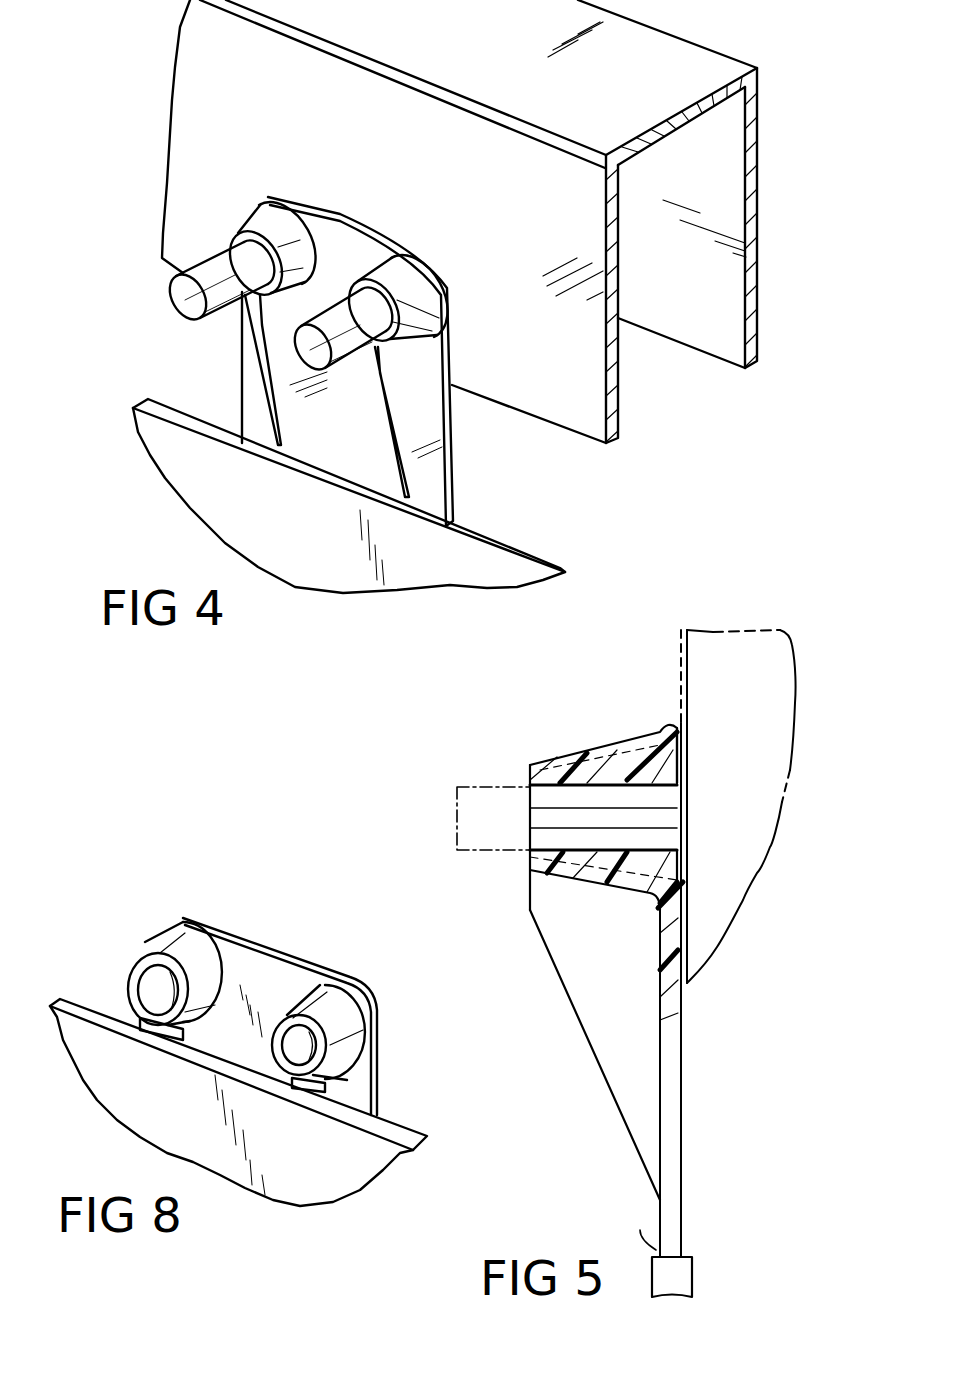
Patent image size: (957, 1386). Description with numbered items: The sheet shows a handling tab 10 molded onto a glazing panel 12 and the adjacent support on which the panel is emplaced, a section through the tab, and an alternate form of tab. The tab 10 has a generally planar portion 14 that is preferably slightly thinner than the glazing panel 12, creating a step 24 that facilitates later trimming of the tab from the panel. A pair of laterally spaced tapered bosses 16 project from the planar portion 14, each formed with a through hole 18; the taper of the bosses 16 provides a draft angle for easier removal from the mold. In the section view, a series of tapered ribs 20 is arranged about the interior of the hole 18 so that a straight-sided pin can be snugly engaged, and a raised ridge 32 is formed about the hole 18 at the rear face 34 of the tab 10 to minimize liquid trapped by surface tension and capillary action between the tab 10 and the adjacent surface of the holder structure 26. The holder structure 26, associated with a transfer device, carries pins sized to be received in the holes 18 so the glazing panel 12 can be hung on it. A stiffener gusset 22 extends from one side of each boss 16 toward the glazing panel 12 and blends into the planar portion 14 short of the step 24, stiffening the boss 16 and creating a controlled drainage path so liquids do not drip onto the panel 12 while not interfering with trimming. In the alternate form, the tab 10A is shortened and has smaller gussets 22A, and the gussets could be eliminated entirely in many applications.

In FIG. 4, the handling tab 10 is at (348, 330).
In FIG. 5, the handling tab 10 is at (520, 952).
In FIG. 8, the handling tab (alternate form) 10A is at (271, 984).
In FIG. 4, the glazing panel 12 is at (494, 567).
In FIG. 5, the glazing panel 12 is at (652, 1268).
In FIG. 8, the glazing panel 12 is at (96, 1086).
In FIG. 4, the planar portion 14 is at (334, 238).
In FIG. 5, the planar portion 14 is at (660, 998).
In FIG. 4, the tapered boss 16 is at (262, 218).
In FIG. 5, the tapered boss 16 is at (614, 785).
In FIG. 5, the through hole 18 is at (537, 798).
In FIG. 5, the tapered rib 20 is at (635, 770).
In FIG. 4, the stiffener gusset 22 is at (255, 350).
In FIG. 5, the stiffener gusset 22 is at (575, 990).
In FIG. 8, the gusset (alternate form) 22A is at (140, 1022).
In FIG. 5, the step 24 is at (652, 1248).
In FIG. 4, the holder structure 26 is at (638, 48).
In FIG. 5, the holder structure 26 is at (745, 643).
In FIG. 5, the raised ridge 32 is at (683, 763).
In FIG. 5, the rear face 34 is at (681, 917).